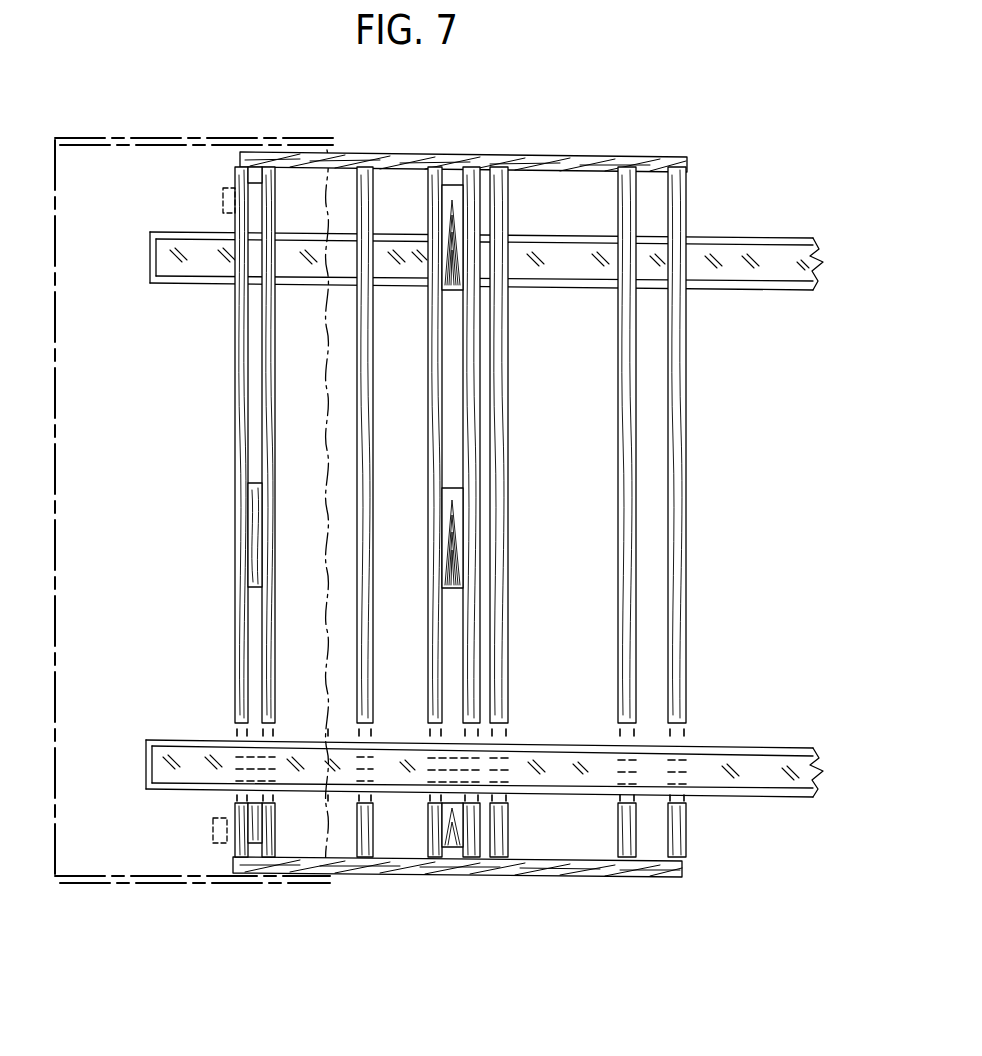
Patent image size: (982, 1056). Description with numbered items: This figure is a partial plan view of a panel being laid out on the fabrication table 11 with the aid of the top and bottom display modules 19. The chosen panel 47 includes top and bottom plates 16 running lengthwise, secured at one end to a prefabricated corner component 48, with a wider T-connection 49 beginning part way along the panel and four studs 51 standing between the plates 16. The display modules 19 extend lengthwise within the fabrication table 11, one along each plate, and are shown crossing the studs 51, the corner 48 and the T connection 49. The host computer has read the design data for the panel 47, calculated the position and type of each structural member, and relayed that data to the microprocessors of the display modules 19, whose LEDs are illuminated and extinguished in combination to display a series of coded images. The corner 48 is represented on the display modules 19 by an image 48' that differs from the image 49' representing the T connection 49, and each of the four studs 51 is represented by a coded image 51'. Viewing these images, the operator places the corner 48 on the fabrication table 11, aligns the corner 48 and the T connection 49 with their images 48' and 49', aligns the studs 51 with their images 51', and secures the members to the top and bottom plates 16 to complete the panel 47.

The fabrication table 11 is at (150, 880).
The plate member 16 is at (665, 156).
The display module 19 is at (173, 285).
The chosen panel 47 is at (697, 533).
The corner component 48 is at (217, 445).
The coded image of the corner 48' is at (222, 757).
The T-connection 49 is at (434, 445).
The coded image of the T connection 49' is at (429, 860).
The stud 51 is at (559, 445).
The coded image of the stud 51' is at (521, 802).